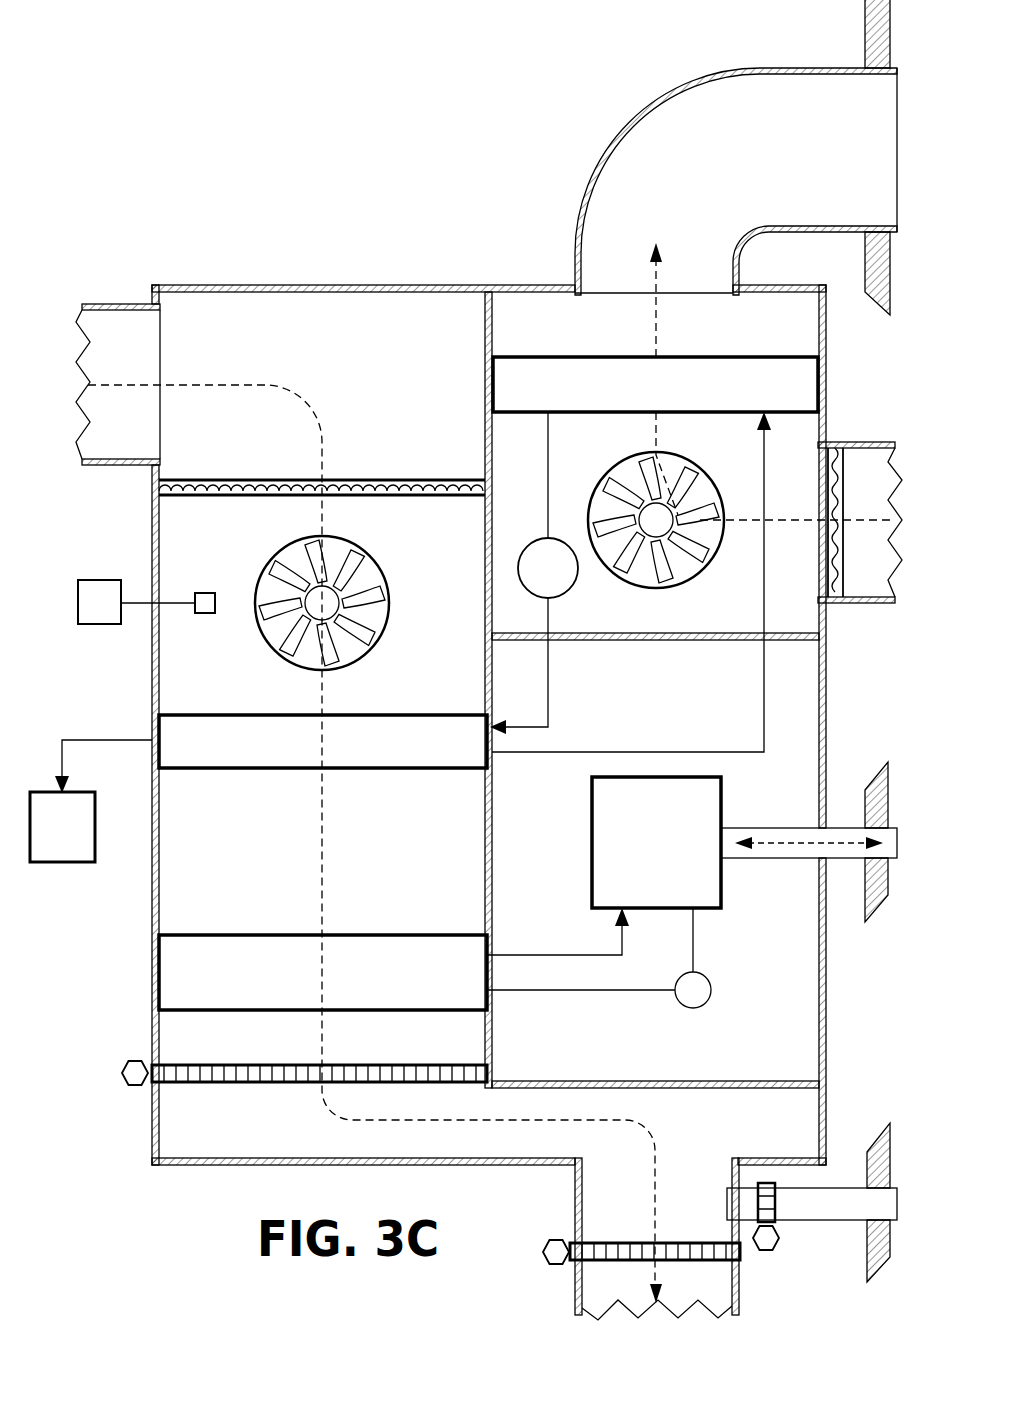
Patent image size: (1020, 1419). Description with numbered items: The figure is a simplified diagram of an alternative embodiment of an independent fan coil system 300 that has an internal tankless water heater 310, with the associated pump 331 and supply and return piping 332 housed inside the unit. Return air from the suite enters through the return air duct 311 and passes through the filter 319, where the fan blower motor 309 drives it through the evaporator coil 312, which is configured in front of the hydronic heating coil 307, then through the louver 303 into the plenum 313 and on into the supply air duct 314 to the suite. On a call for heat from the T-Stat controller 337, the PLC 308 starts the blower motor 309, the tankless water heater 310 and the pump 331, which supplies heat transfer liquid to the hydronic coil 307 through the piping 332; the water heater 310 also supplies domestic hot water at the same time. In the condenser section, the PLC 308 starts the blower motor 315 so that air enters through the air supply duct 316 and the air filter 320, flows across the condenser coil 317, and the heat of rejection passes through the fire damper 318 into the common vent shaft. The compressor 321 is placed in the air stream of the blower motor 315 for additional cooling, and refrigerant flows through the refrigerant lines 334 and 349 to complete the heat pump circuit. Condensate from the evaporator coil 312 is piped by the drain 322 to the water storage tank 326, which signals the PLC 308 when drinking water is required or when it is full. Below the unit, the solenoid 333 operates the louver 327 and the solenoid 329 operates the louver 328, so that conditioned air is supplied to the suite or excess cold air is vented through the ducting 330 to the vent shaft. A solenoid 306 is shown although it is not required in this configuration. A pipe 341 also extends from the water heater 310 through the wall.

The independent fan coil system 300 is at (292, 280).
The louver 303 is at (374, 1064).
The solenoid 306 is at (121, 1073).
The hydronic heating coil 307 is at (218, 935).
The PLC 308 is at (205, 592).
The fan blower motor 309 is at (388, 558).
The tankless water heater 310 is at (592, 843).
The return air duct 311 is at (118, 304).
The evaporator coil 312 is at (406, 770).
The plenum 313 is at (228, 1136).
The supply air duct 314 is at (575, 1197).
The blower motor 315 is at (592, 481).
The air supply duct 316 is at (856, 440).
The condenser coil 317 is at (712, 355).
The fire damper 318 is at (865, 38).
The filter 319 is at (418, 477).
The air filter 320 is at (846, 596).
The compressor 321 is at (530, 583).
The drain 322 is at (118, 740).
The water storage tank 326 is at (44, 845).
The louver 327 is at (615, 1243).
The louver 328 is at (767, 1183).
The solenoid 329 is at (767, 1251).
The ducting 330 is at (818, 1222).
The pump 331 is at (711, 990).
The supply and return piping 332 is at (555, 955).
The solenoid 333 is at (543, 1256).
The refrigerant line 334 is at (550, 665).
The T-Stat controller 337 is at (100, 580).
The water supply pipe 341 is at (784, 828).
The refrigerant line 349 is at (763, 665).